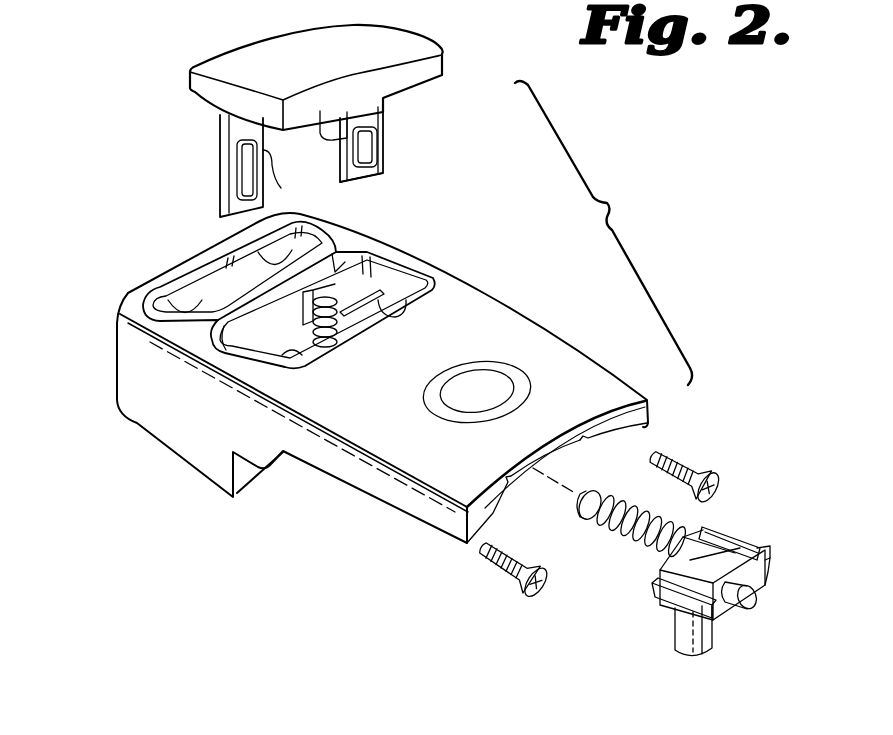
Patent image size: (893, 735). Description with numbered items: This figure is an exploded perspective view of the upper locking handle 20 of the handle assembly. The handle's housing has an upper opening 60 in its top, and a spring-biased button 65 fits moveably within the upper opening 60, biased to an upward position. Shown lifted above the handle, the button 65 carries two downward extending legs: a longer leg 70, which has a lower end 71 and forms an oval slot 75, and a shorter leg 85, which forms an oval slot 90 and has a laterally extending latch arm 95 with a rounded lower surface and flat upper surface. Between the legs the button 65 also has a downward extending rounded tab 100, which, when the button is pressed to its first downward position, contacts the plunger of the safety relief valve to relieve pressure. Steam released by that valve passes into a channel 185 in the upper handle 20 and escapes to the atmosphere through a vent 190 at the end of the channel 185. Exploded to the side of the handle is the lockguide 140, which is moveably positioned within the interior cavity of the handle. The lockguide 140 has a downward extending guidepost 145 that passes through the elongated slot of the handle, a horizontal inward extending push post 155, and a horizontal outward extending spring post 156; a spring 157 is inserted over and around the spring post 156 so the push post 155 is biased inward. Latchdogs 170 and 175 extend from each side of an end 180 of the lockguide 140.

The upper locking handle 20 is at (115, 363).
The upper opening 60 is at (400, 272).
The spring-biased button 65 is at (410, 35).
The downward extending leg 70 is at (383, 117).
The lower end 71 is at (373, 177).
The oval slot 75 is at (373, 147).
The downward extending leg 85 is at (220, 133).
The oval slot 90 is at (243, 170).
The latch arm 95 is at (281, 188).
The rounded tab 100 is at (333, 138).
The lockguide 140 is at (717, 528).
The guidepost 145 is at (675, 647).
The push post 155 is at (750, 608).
The spring post 156 is at (627, 540).
The spring 157 is at (610, 490).
The latchdog 170 is at (763, 552).
The latchdog 175 is at (707, 588).
The end 180 is at (757, 578).
The channel 185 is at (527, 470).
The vent 190 is at (577, 440).